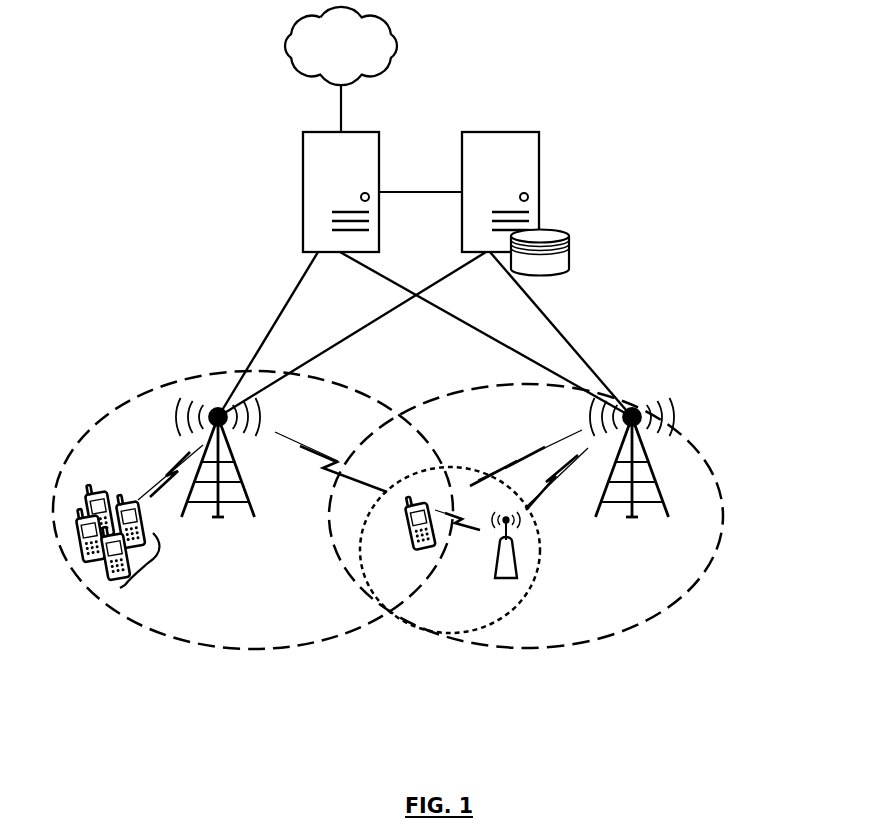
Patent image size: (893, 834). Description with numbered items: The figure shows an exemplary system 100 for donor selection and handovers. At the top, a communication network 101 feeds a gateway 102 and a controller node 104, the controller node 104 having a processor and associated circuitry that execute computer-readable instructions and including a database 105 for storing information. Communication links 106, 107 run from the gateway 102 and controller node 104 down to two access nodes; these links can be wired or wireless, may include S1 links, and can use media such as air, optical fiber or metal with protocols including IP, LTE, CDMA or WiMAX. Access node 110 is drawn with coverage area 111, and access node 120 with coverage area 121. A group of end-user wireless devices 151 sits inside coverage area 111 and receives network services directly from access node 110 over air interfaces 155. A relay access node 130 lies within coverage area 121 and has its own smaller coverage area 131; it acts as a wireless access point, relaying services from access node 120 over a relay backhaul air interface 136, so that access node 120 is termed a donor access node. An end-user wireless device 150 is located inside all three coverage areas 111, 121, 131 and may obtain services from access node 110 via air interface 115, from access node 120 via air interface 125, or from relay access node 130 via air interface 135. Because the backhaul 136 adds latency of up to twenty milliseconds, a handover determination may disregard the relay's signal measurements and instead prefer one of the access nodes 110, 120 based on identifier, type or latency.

The system 100 is at (510, 66).
The communication network 101 is at (321, 59).
The gateway 102 is at (303, 192).
The controller node 104 is at (539, 192).
The database 105 is at (578, 252).
The communication link 106 is at (474, 334).
The communication link 107 is at (352, 334).
The access node 110 is at (212, 410).
The coverage area 111 is at (253, 520).
The air interface 115 is at (327, 463).
The access node 120 is at (638, 411).
The coverage area 121 is at (528, 518).
The air interface 125 is at (547, 447).
The relay access node 130 is at (551, 553).
The coverage area 131 is at (466, 556).
The air interface 135 is at (434, 552).
The relay backhaul air interface 136 is at (579, 500).
The end-user wireless device 150 is at (385, 529).
The end-user wireless devices 151 is at (144, 538).
The air interfaces 155 is at (167, 470).